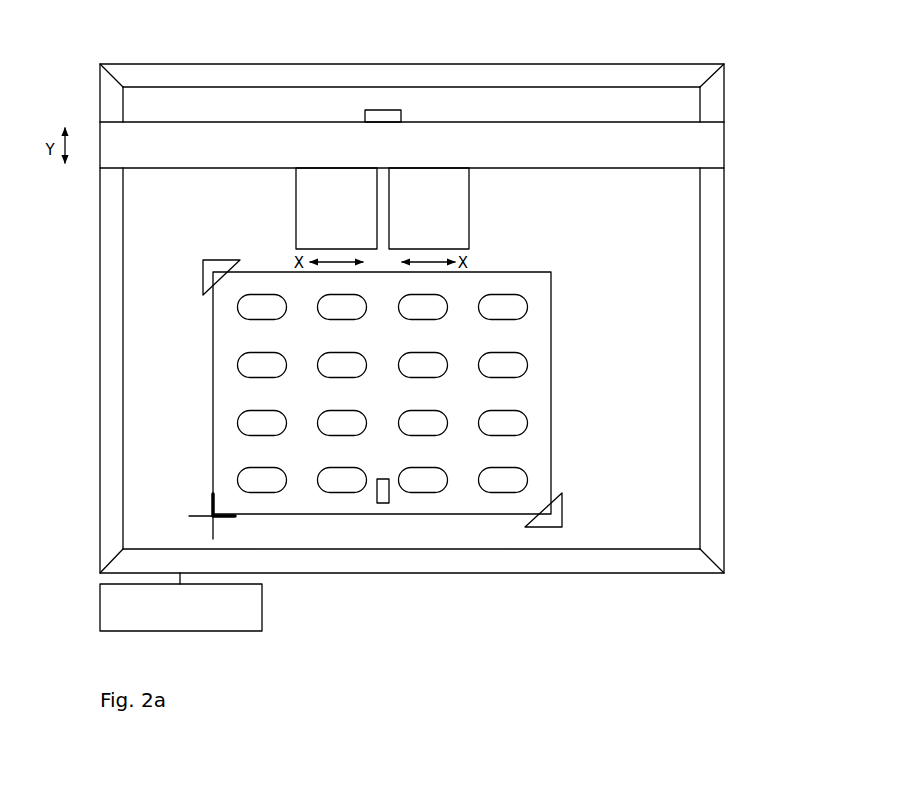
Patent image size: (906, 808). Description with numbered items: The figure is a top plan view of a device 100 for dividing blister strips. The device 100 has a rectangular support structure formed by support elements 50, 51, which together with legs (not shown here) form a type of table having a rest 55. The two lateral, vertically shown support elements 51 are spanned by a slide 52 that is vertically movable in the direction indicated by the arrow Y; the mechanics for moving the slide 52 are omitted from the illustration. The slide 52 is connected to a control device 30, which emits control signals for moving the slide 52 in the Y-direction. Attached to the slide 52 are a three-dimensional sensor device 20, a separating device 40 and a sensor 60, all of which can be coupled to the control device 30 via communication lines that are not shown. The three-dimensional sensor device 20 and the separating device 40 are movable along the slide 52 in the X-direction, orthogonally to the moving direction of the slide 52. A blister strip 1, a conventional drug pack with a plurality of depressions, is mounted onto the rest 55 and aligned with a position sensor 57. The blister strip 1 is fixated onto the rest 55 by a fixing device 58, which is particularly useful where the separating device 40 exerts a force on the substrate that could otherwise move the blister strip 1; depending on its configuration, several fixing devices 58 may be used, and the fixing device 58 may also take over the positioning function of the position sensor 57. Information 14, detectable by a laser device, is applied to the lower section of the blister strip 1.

The device for dividing blister strips 100 is at (92, 56).
The support element 50 is at (215, 75).
The lateral support element 51 is at (110, 377).
The slide 52 is at (619, 145).
The rest 55 is at (655, 248).
The 3D-sensor device 20 is at (341, 213).
The separating device 40 is at (422, 213).
The sensor 60 is at (383, 115).
The blister strip 1 is at (572, 411).
The information 14 is at (382, 490).
The fixing device 58 is at (215, 272).
The position sensor 57 is at (205, 516).
The control device 30 is at (227, 608).